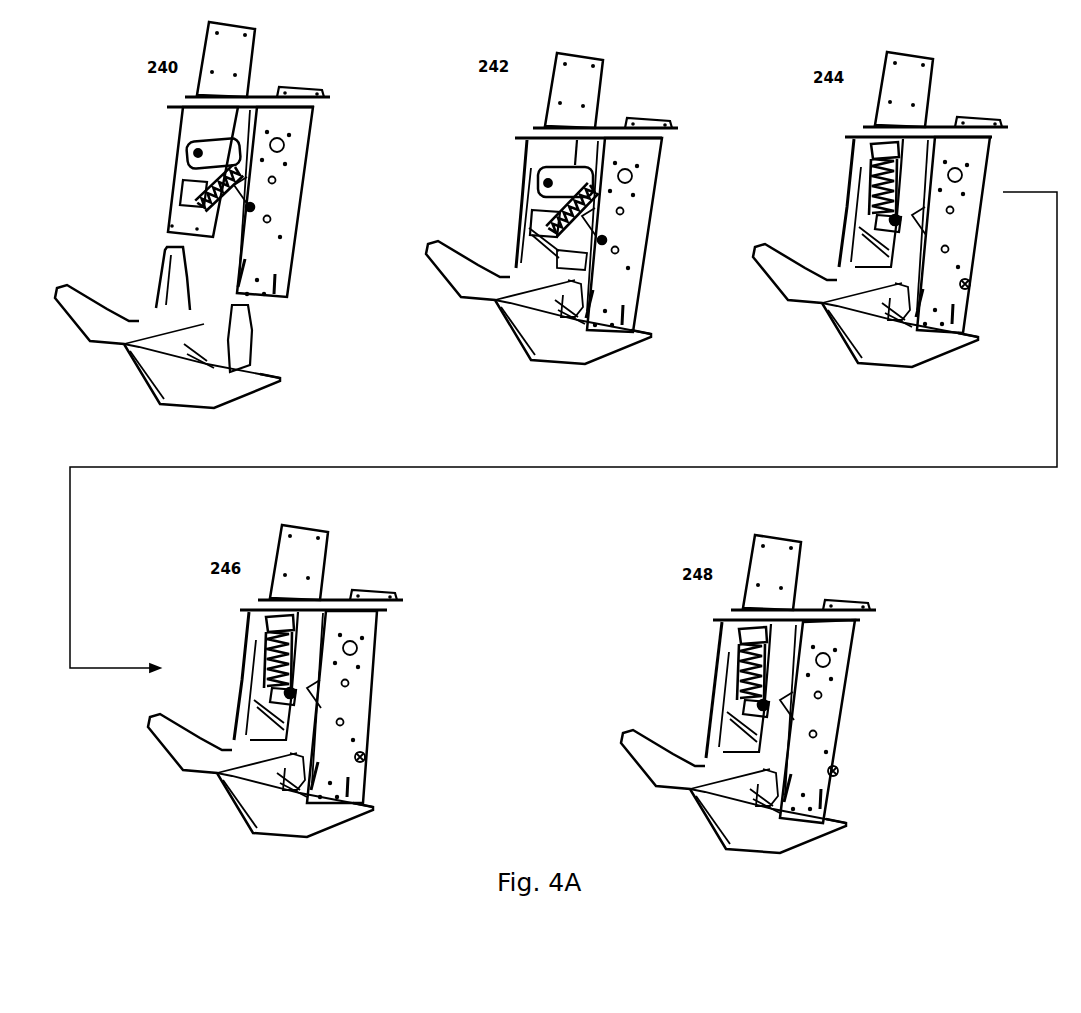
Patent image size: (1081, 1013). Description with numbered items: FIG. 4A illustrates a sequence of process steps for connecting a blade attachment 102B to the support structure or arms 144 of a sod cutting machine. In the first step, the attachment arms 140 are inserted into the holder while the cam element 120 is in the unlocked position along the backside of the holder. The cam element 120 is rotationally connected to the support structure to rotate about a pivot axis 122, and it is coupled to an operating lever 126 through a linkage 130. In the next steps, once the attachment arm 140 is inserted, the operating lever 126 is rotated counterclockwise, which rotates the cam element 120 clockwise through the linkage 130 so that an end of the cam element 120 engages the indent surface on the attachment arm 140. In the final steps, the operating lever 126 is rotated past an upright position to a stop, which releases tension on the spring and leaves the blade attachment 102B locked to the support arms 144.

The blade attachment 102B is at (268, 352).
The cam element 120 is at (205, 208).
The pivot axis 122 is at (970, 282).
The operating lever 126 is at (180, 147).
The linkage 130 is at (182, 176).
The attachment arm 140 is at (160, 305).
The support arms 144 is at (180, 121).